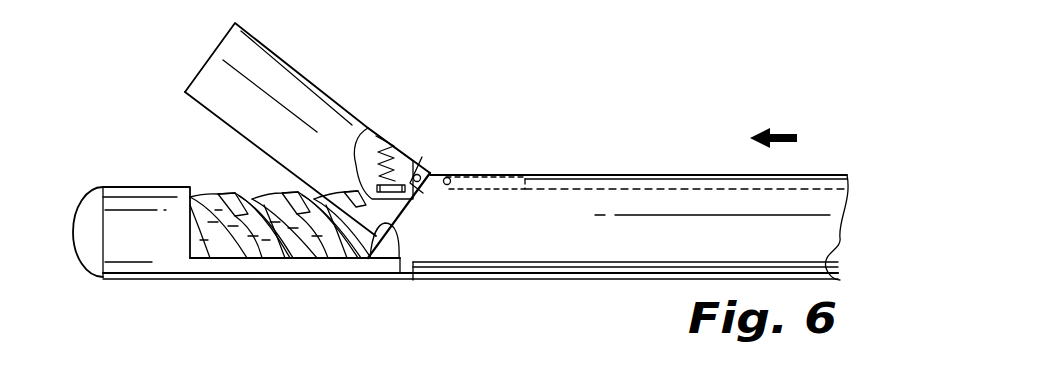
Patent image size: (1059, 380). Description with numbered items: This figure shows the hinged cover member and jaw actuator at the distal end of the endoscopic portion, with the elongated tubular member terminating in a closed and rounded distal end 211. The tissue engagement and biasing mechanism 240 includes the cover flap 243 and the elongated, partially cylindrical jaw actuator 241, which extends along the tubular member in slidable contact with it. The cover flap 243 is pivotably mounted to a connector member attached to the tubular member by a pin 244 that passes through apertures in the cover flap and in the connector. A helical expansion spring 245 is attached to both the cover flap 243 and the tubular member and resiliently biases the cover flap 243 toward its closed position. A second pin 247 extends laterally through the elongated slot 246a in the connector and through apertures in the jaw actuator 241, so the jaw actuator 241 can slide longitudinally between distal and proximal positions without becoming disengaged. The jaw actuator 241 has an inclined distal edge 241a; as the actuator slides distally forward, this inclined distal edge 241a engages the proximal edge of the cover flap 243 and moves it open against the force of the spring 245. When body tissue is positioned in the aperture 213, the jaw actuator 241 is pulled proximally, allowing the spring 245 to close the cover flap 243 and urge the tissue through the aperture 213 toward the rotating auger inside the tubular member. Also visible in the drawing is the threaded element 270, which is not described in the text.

The distal end 211 is at (83, 212).
The aperture 213 is at (192, 160).
The cover flap 243 is at (285, 78).
The helical expansion spring 245 is at (362, 134).
The pin 244 is at (420, 166).
The pin 247 is at (447, 177).
The elongated slot 246a is at (498, 173).
The tissue engagement and biasing mechanism 240 is at (568, 122).
The jaw actuator 241 is at (680, 232).
The screw 270 is at (233, 240).
The distal edge 241a is at (396, 230).